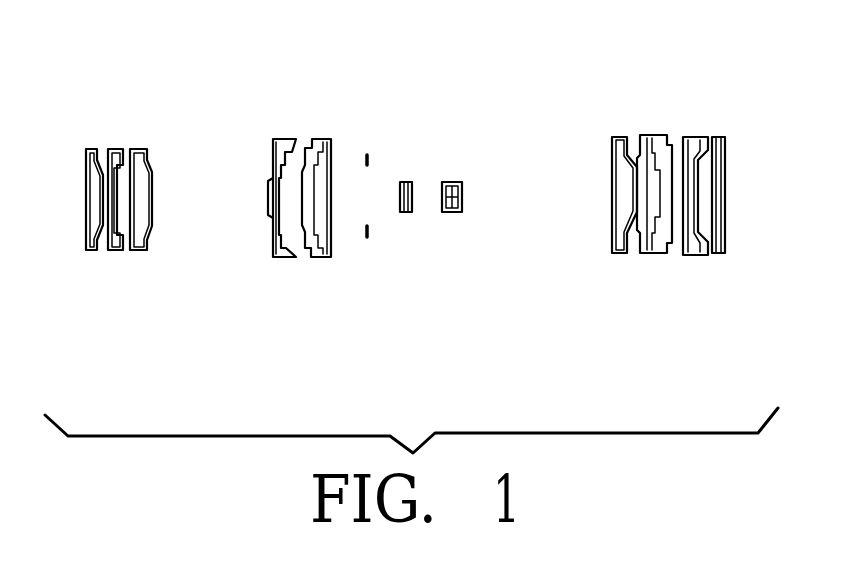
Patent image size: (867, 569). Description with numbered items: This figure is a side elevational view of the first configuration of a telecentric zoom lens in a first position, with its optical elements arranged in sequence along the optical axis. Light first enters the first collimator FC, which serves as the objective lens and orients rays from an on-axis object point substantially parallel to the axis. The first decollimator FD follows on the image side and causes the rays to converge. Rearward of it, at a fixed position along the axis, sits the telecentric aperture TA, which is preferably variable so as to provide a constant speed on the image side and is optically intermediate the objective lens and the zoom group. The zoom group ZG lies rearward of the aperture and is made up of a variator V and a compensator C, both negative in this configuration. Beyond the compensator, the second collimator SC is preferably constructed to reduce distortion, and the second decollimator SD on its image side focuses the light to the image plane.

The first collimator FC is at (158, 112).
The first decollimator FD is at (340, 112).
The telecentric aperture TA is at (367, 150).
The zoom group ZG is at (465, 163).
The variator V is at (408, 220).
The compensator C is at (453, 220).
The second collimator SC is at (670, 107).
The second decollimator SD is at (733, 277).